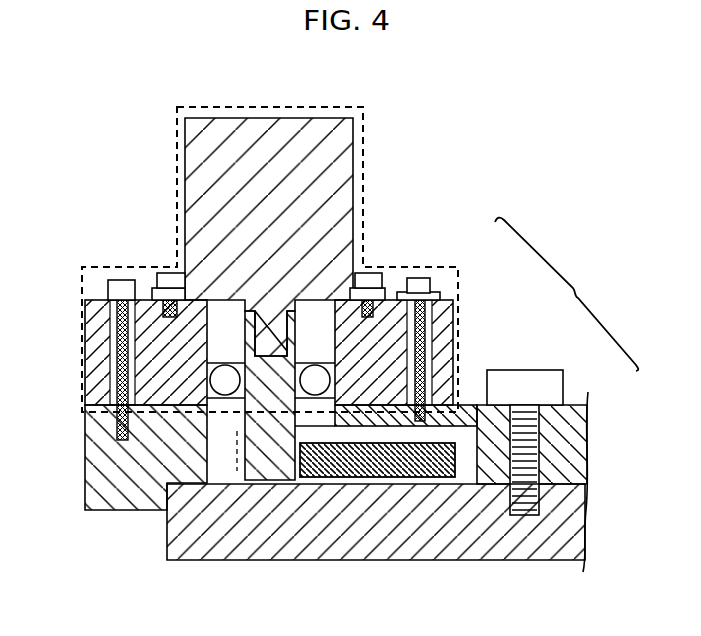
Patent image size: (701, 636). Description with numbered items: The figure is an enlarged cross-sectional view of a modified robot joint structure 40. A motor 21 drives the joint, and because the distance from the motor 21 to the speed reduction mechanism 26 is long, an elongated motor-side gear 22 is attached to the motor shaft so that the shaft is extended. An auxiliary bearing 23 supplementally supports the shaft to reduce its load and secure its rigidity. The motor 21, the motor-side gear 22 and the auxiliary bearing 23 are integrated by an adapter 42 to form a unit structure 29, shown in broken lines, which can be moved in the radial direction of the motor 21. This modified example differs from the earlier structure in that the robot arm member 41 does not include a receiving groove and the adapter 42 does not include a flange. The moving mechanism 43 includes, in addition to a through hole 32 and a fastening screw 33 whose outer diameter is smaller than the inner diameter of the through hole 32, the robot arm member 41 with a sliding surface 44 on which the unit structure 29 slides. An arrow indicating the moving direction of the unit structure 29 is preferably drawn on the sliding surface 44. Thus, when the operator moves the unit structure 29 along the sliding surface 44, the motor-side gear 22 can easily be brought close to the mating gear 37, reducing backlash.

The motor 21 is at (208, 150).
The motor-side gear 22 is at (268, 453).
The auxiliary bearing 23 is at (221, 378).
The speed reduction mechanism 26 is at (570, 522).
The unit structure 29 is at (367, 128).
The through hole 32 is at (447, 330).
The fastening screw 33 is at (122, 282).
The mating gear 37 is at (418, 465).
The robot joint structure 40 is at (605, 115).
The robot arm member 41 is at (574, 405).
The adapter 42 is at (393, 300).
The moving mechanism 43 is at (566, 294).
The sliding surface 44 is at (470, 405).